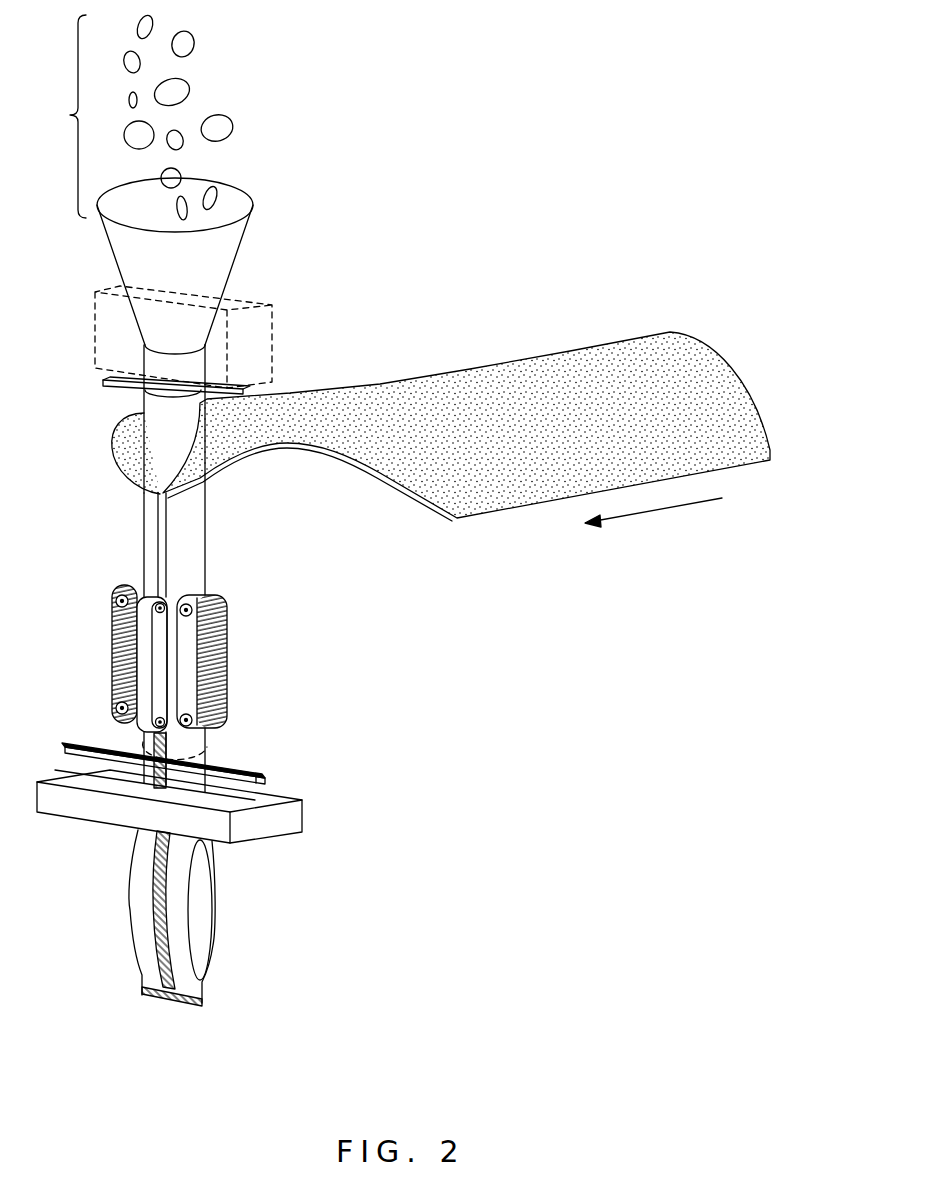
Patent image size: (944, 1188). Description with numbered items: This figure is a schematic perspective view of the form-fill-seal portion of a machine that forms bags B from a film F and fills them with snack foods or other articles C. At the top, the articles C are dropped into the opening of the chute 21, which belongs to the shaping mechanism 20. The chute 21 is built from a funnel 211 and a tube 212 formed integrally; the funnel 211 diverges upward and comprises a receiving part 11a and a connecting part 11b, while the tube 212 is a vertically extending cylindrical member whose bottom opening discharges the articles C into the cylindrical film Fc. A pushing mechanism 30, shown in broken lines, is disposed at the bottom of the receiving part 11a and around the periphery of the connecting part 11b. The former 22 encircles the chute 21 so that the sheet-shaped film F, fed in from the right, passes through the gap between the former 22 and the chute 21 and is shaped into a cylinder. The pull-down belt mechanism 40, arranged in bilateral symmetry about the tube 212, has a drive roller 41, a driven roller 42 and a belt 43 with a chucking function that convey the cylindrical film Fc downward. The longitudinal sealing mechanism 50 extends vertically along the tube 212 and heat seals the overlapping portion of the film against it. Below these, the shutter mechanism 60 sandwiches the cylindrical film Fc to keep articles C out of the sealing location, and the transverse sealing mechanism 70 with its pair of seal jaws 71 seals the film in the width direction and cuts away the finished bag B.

The shaping mechanism 20 is at (402, 340).
The chute 21 is at (282, 210).
The funnel 211 is at (357, 250).
The receiving part 11a is at (234, 262).
The connecting part 11b is at (205, 358).
The tube 212 is at (180, 427).
The former 22 is at (310, 450).
The pushing mechanism 30 is at (93, 302).
The pull-down belt mechanism 40 is at (179, 628).
The drive roller 41 is at (183, 593).
The driven roller 42 is at (188, 720).
The belt 43 is at (213, 675).
The longitudinal sealing mechanism 50 is at (143, 727).
The shutter mechanism 60 is at (283, 777).
The transverse sealing mechanism 70 is at (255, 848).
The seal jaws 71 is at (105, 808).
The articles C is at (133, 115).
The film F is at (513, 493).
The cylindrical film Fc is at (147, 538).
The bag B is at (205, 907).